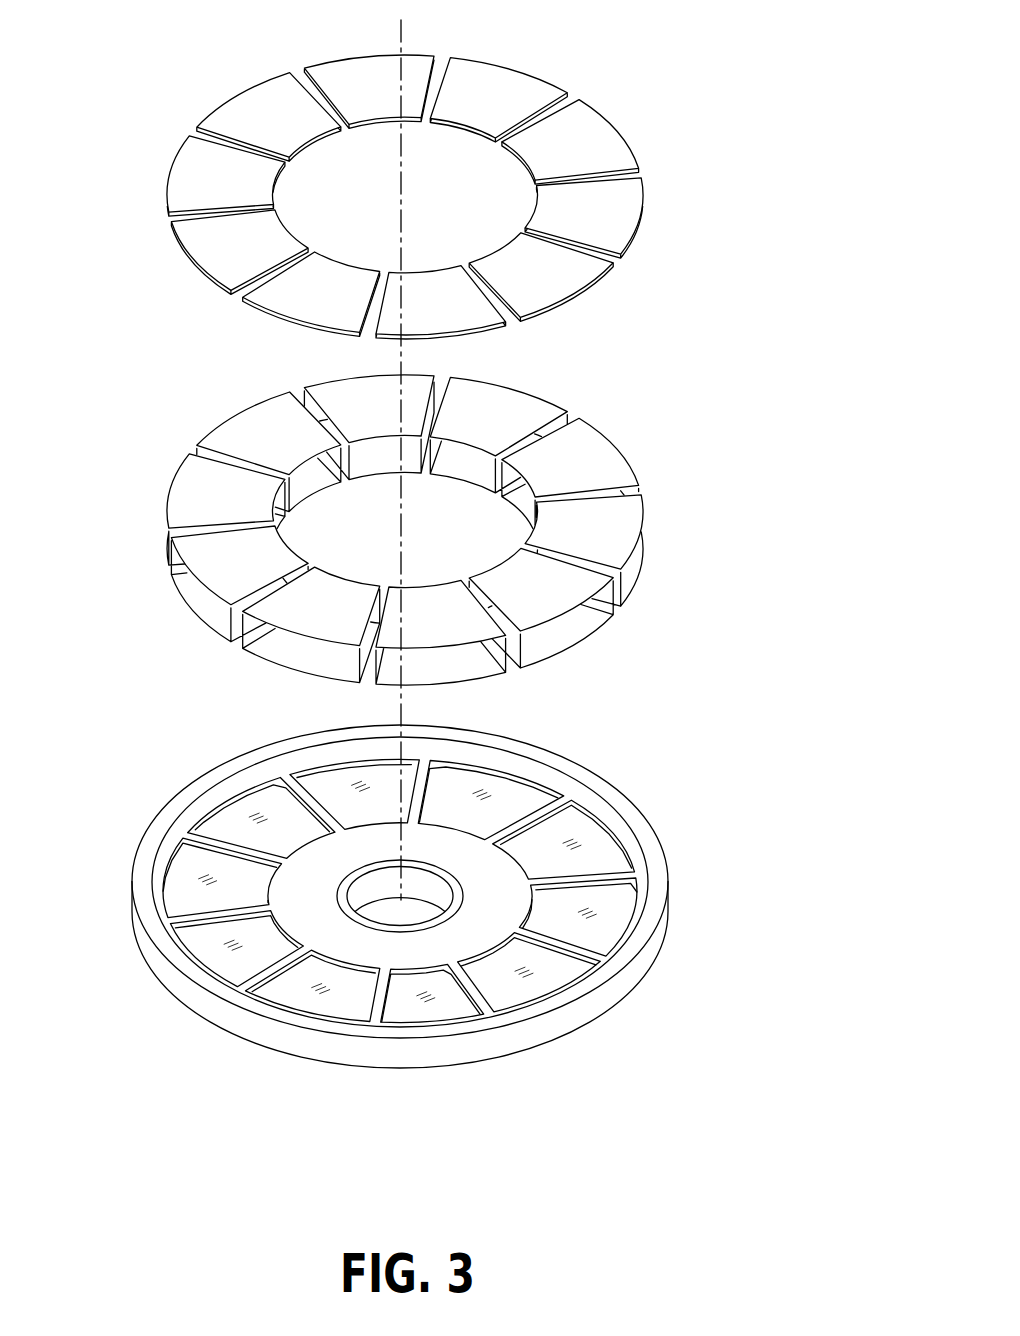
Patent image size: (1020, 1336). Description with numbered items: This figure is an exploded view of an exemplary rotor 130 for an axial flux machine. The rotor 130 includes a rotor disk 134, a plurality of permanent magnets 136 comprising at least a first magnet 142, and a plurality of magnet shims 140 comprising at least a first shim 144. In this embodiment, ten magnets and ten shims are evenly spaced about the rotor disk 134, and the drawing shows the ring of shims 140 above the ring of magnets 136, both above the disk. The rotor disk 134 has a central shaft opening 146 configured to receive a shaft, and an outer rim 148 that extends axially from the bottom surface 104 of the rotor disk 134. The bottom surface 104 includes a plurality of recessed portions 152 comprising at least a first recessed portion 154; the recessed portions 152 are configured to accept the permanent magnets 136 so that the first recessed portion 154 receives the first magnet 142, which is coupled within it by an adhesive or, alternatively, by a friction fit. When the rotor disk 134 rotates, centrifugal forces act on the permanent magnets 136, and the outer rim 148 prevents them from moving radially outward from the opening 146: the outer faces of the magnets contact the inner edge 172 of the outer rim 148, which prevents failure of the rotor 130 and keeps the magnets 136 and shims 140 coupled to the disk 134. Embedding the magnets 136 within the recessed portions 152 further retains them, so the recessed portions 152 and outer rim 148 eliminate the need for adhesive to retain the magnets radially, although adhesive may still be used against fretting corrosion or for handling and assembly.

The rotor 130 is at (770, 85).
The rotor disk 134 is at (148, 946).
The plurality of permanent magnets 136 is at (630, 440).
The plurality of magnet shims 140 is at (606, 95).
The first magnet 142 is at (460, 661).
The first shim 144 is at (452, 318).
The shaft opening 146 is at (410, 917).
The outer rim 148 is at (655, 853).
The plurality of recessed portions 152 is at (520, 983).
The first recessed portion 154 is at (460, 1008).
The inner edge 172 is at (583, 792).
The bottom surface 104 is at (243, 968).